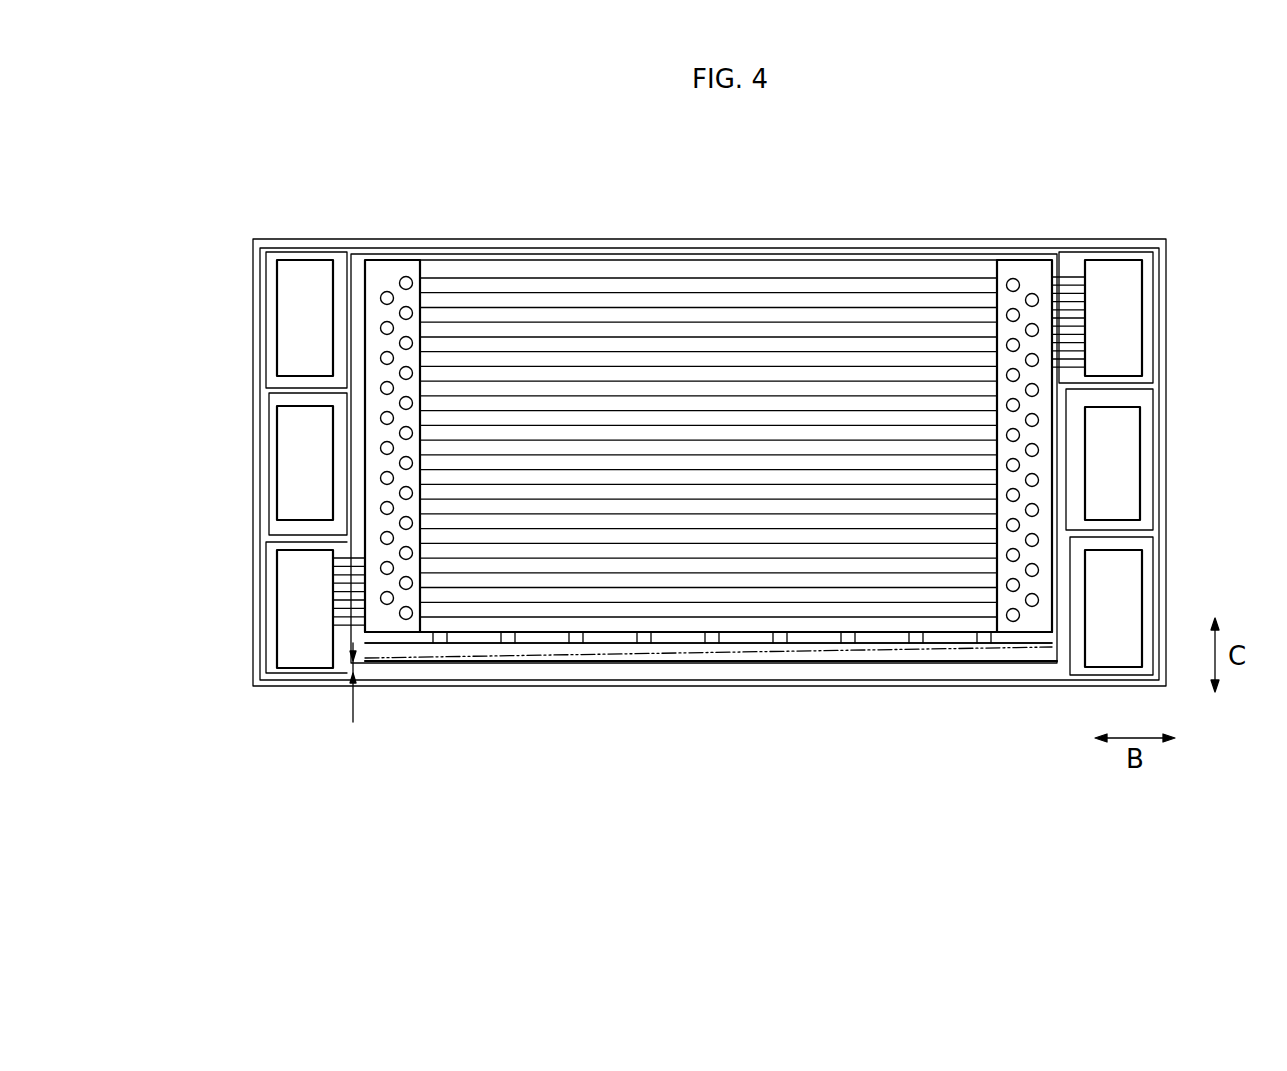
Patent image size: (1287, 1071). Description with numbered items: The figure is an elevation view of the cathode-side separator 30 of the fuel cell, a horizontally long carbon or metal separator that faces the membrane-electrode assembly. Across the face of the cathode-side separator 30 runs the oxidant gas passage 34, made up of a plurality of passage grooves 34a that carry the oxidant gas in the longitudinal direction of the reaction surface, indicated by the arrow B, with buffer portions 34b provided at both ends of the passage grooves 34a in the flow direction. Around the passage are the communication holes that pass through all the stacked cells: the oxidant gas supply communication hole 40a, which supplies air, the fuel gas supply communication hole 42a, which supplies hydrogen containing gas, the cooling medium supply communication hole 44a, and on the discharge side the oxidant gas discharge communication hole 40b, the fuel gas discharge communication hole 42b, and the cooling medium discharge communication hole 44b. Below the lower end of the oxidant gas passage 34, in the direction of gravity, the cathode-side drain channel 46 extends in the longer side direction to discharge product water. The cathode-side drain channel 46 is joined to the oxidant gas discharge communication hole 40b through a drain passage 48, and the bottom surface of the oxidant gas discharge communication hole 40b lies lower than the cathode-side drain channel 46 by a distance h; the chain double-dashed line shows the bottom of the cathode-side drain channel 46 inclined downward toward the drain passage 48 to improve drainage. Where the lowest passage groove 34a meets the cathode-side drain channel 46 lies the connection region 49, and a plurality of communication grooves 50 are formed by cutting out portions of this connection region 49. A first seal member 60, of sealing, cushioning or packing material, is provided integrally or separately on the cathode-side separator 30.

The cathode-side separator 30 is at (803, 143).
The oxidant gas passage 34 is at (767, 300).
The passage grooves 34a is at (858, 347).
The buffer portions 34b is at (385, 292).
The oxidant gas supply communication hole 40a is at (1130, 362).
The oxidant gas discharge communication hole 40b is at (291, 558).
The fuel gas supply communication hole 42a is at (291, 354).
The fuel gas discharge communication hole 42b is at (1128, 573).
The cooling medium supply communication hole 44a is at (286, 500).
The cooling medium discharge communication hole 44b is at (1131, 497).
The cathode-side drain channel 46 is at (858, 662).
The drain passage 48 is at (347, 658).
The connection region 49 is at (677, 638).
The communication grooves 50 is at (573, 639).
The first seal member 60 is at (1110, 248).